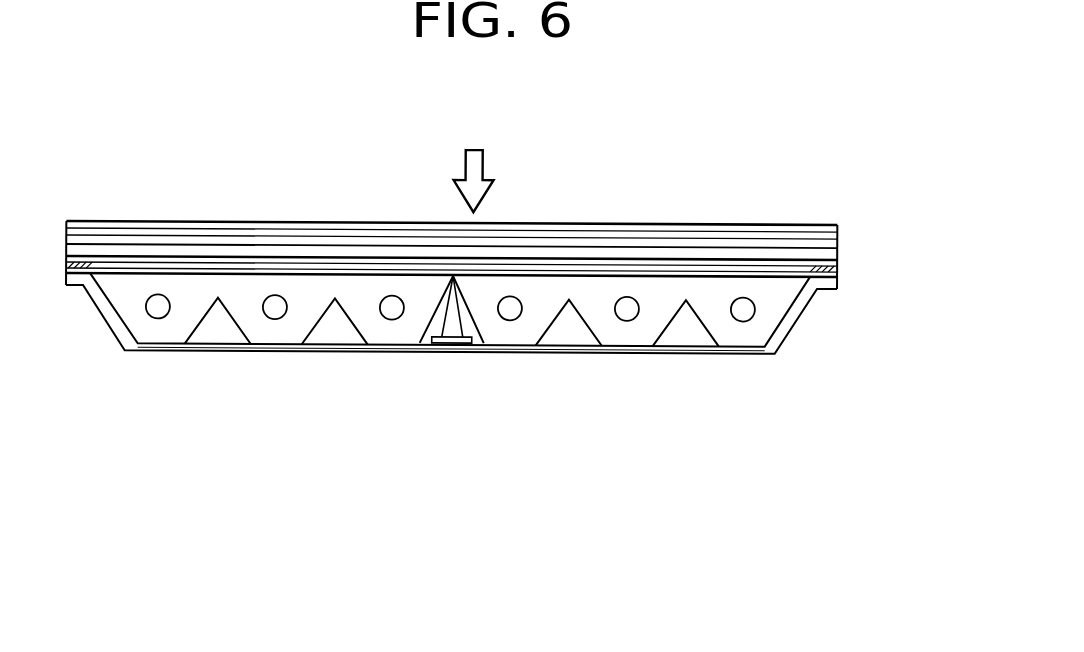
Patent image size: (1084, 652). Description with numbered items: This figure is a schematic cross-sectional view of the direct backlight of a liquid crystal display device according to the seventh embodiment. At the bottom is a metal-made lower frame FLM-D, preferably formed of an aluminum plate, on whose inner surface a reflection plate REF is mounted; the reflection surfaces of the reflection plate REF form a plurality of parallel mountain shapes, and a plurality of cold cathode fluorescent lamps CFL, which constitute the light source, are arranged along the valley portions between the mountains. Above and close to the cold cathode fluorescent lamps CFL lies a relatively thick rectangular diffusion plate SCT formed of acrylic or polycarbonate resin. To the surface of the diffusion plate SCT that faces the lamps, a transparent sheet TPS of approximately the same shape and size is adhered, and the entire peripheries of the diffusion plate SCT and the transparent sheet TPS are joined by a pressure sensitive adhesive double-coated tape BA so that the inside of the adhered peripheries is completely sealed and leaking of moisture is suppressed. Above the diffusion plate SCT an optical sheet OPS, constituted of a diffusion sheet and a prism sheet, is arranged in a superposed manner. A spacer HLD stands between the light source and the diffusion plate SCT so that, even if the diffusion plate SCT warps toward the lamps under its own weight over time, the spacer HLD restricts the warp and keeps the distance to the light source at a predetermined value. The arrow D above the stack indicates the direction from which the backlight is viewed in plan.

The optical sheet OPS is at (700, 215).
The diffusion plate SCT is at (835, 257).
The pressure sensitive adhesive double-coated tape BA is at (835, 270).
The transparent sheet TPS is at (773, 277).
The cold cathode fluorescent lamp CFL is at (155, 319).
The reflection plate REF is at (315, 322).
The spacer HLD is at (452, 330).
The lower frame FLM-D is at (567, 353).
The arrow D is at (473, 162).